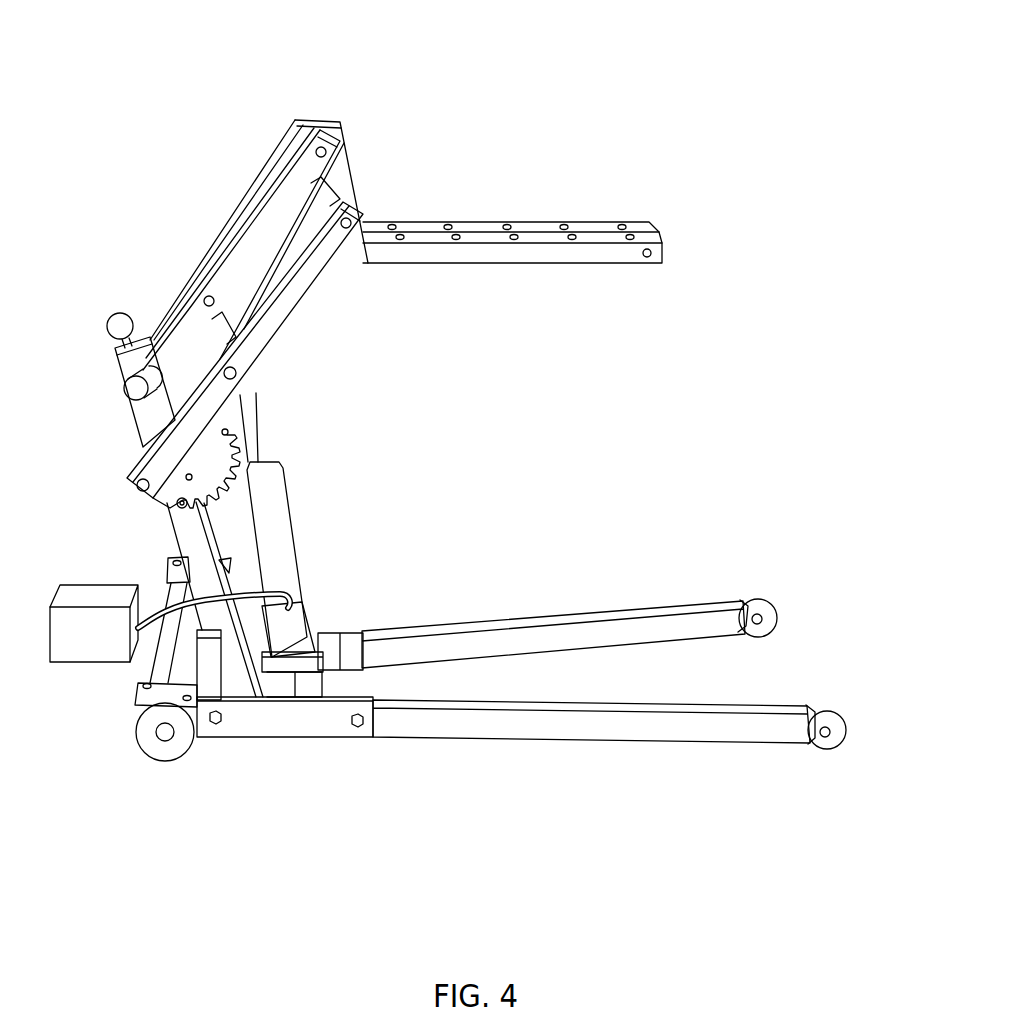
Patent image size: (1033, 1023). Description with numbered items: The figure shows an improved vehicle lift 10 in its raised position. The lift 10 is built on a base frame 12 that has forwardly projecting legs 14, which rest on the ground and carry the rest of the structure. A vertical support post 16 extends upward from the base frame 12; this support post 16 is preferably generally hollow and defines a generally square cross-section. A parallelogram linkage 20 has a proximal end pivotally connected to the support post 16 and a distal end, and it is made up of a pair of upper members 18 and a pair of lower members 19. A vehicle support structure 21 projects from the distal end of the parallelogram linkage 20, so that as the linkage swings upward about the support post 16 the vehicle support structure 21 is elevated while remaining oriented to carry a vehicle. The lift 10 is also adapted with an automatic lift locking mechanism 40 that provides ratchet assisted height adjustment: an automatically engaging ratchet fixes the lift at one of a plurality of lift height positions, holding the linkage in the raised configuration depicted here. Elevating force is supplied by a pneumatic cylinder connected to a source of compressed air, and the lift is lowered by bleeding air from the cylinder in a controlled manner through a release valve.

The vehicle lift 10 is at (722, 97).
The base frame 12 is at (303, 757).
The forwardly projecting legs 14 is at (603, 617).
The vertical support post 16 is at (192, 528).
The upper members 18 is at (260, 237).
The lower members 19 is at (305, 281).
The parallelogram linkage 20 is at (135, 180).
The vehicle support structure 21 is at (527, 210).
The automatic lift locking mechanism 40 is at (252, 418).